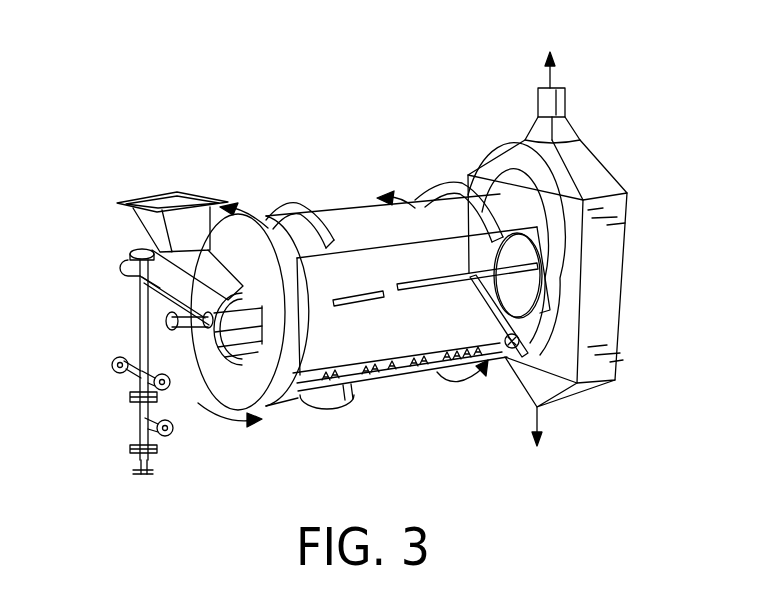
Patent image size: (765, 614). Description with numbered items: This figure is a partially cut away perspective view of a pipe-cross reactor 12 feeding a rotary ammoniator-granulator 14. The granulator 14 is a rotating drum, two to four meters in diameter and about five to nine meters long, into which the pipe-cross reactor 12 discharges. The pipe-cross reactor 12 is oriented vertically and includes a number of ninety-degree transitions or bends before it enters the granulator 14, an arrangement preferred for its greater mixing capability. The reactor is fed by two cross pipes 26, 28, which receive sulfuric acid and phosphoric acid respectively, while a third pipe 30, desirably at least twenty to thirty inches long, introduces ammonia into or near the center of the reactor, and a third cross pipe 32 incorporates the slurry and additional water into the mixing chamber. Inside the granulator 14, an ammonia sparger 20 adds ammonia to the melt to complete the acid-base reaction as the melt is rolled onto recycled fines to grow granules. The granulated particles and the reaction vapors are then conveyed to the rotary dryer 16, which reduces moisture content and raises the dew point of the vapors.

The pipe-cross reactor 12 is at (336, 300).
The granulator 14 is at (330, 162).
The rotary dryer 16 is at (552, 247).
The ammonia sparger 20 is at (388, 370).
The cross pipe 26 is at (112, 375).
The cross pipe 28 is at (170, 388).
The third pipe 30 is at (146, 478).
The third cross pipe 32 is at (172, 433).